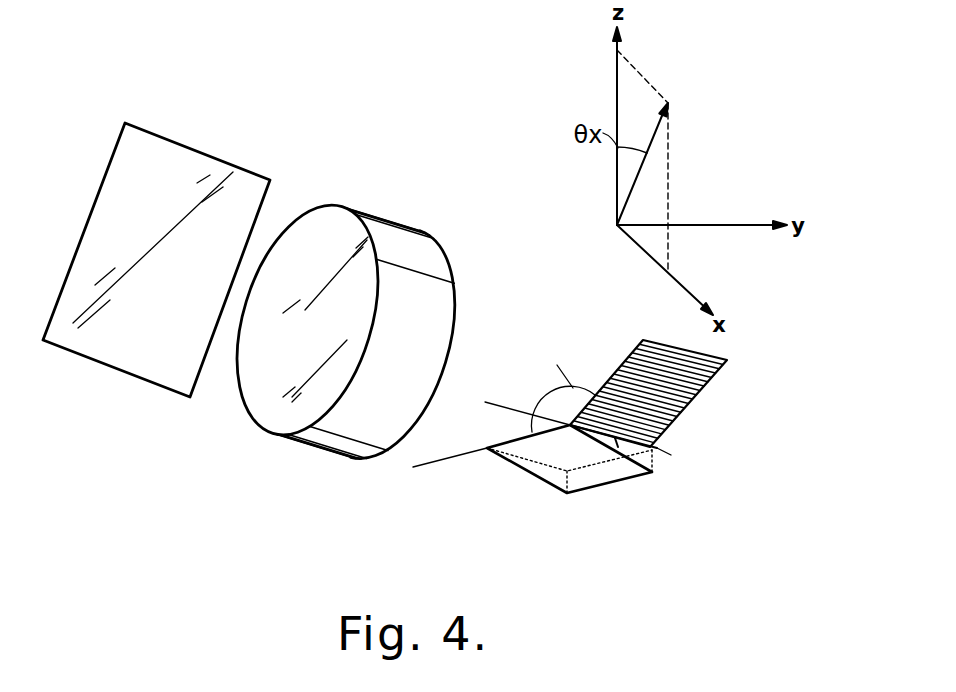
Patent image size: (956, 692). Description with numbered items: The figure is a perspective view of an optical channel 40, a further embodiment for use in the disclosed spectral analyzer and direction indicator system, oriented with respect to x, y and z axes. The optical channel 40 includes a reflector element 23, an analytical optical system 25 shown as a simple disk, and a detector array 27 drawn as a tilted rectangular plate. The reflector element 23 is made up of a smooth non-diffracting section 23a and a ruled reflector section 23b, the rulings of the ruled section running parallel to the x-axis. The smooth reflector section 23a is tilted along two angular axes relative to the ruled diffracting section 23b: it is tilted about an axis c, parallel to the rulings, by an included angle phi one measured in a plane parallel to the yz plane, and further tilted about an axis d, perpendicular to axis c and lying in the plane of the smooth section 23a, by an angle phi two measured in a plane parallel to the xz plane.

The reflector element 23 is at (580, 440).
The smooth non-diffracting section 23a is at (590, 490).
The ruled reflector section 23b is at (693, 395).
The analytical optical system 25 is at (327, 445).
The detector array 27 is at (177, 378).
The optical channel 40 is at (648, 612).